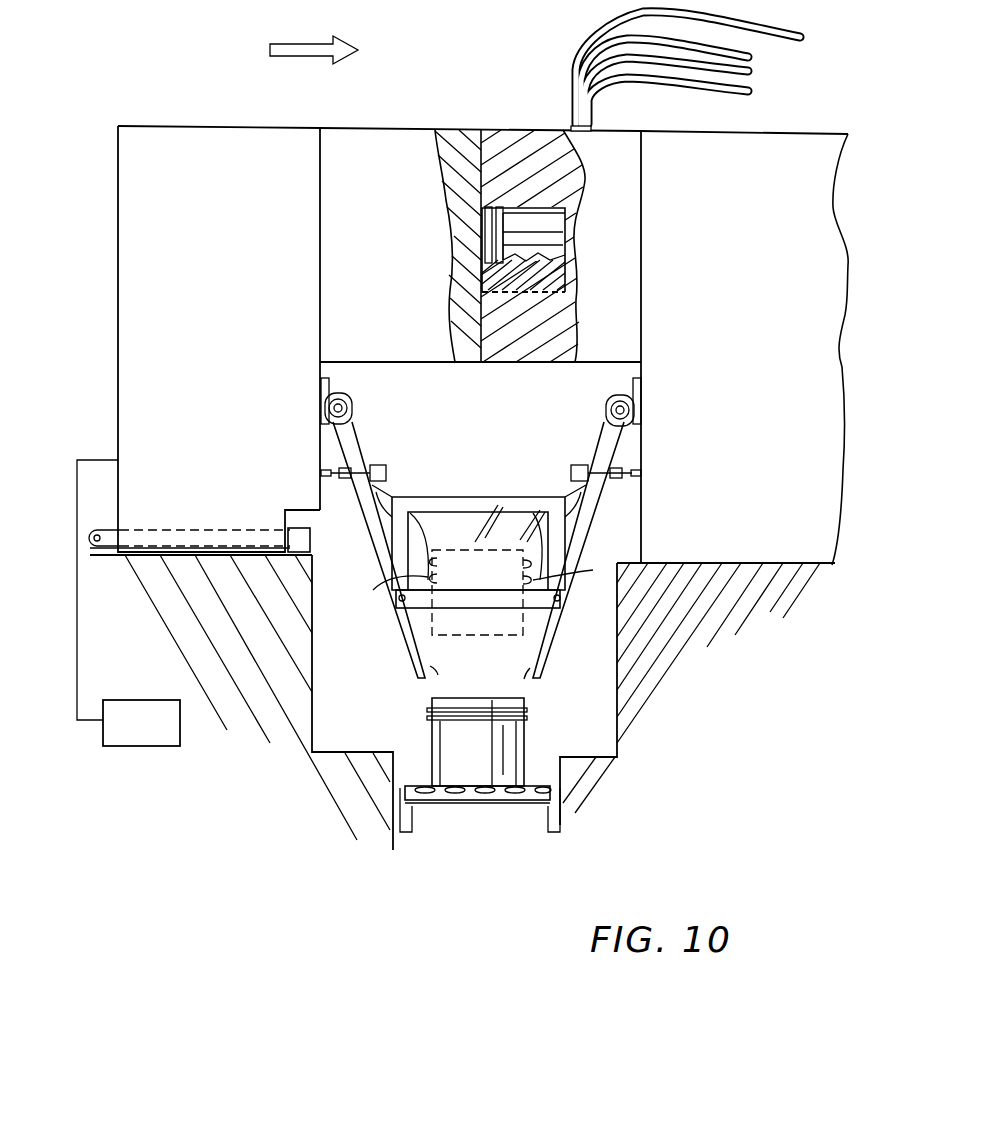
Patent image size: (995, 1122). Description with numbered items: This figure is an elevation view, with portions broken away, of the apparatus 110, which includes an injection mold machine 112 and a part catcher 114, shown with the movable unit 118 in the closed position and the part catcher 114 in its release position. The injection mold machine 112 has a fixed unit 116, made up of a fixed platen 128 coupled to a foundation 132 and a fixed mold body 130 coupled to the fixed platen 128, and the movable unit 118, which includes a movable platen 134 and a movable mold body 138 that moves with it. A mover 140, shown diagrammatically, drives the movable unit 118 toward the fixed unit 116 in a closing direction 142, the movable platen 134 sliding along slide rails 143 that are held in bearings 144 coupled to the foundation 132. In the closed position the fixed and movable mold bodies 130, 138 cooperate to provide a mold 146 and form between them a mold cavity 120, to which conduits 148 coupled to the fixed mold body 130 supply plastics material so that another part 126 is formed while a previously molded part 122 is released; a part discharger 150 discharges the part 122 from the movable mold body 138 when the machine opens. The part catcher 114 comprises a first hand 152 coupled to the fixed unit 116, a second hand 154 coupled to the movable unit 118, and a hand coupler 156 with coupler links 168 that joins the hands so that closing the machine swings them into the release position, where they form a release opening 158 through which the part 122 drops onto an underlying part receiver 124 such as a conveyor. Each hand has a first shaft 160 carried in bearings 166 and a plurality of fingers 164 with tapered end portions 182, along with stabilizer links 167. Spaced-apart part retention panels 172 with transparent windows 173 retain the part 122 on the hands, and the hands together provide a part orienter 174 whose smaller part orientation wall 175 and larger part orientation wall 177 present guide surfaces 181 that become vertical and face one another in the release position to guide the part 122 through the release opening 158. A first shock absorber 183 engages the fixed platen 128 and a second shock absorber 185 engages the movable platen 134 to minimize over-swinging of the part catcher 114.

The apparatus 110 is at (213, 108).
The injection mold machine 112 is at (305, 120).
The part catcher 114 is at (385, 677).
The fixed unit 116 is at (736, 544).
The movable unit 118 is at (222, 510).
The mold cavity 120 is at (600, 284).
The part 122 is at (500, 748).
The part receiver 124 is at (420, 784).
The another part 126 is at (602, 237).
The fixed platen 128 is at (632, 520).
The fixed mold body 130 is at (623, 321).
The foundation 132 is at (650, 670).
The movable platen 134 is at (158, 140).
The movable mold body 138 is at (452, 128).
The mover 140 is at (172, 746).
The closing direction 142 is at (304, 47).
The slide rails 143 is at (103, 536).
The bearings 144 is at (301, 528).
The mold 146 is at (493, 126).
The conduits 148 is at (591, 106).
The part discharger 150 is at (447, 244).
The first hand 152 is at (594, 660).
The second hand 154 is at (360, 570).
The hand coupler 156 is at (487, 629).
The release opening 158 is at (478, 638).
The first shaft 160 is at (350, 405).
The fingers 164 is at (412, 632).
The bearings 166 is at (333, 400).
The stabilizer links 167 is at (372, 510).
The coupler links 168 is at (460, 600).
The part retention panels 172 is at (468, 495).
The window 173 is at (503, 523).
The part orienter 174 is at (558, 485).
The smaller part orientation wall 175 is at (537, 584).
The larger part orientation wall 177 is at (428, 583).
The guide surface 181 is at (398, 601).
The tapered end portions 182 is at (428, 654).
The first shock absorber 183 is at (582, 465).
The second shock absorber 185 is at (380, 465).